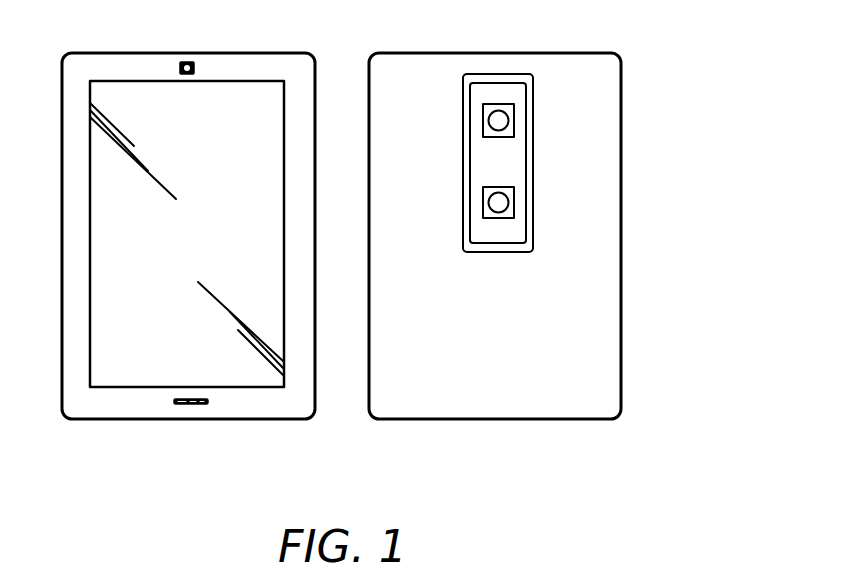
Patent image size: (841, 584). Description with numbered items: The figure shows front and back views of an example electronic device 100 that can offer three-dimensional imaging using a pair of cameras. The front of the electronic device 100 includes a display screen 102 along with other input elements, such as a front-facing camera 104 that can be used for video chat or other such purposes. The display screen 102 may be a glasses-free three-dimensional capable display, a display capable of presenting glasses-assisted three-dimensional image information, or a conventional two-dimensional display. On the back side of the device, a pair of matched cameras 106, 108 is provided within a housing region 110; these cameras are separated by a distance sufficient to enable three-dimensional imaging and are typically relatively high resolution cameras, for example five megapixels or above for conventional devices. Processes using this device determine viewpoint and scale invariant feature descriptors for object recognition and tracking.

The electronic device 100 is at (737, 97).
The display screen 102 is at (90, 88).
The front-facing camera 104 is at (187, 61).
The matched camera 106 is at (514, 124).
The matched camera 108 is at (514, 208).
The rear camera module housing 110 is at (467, 155).